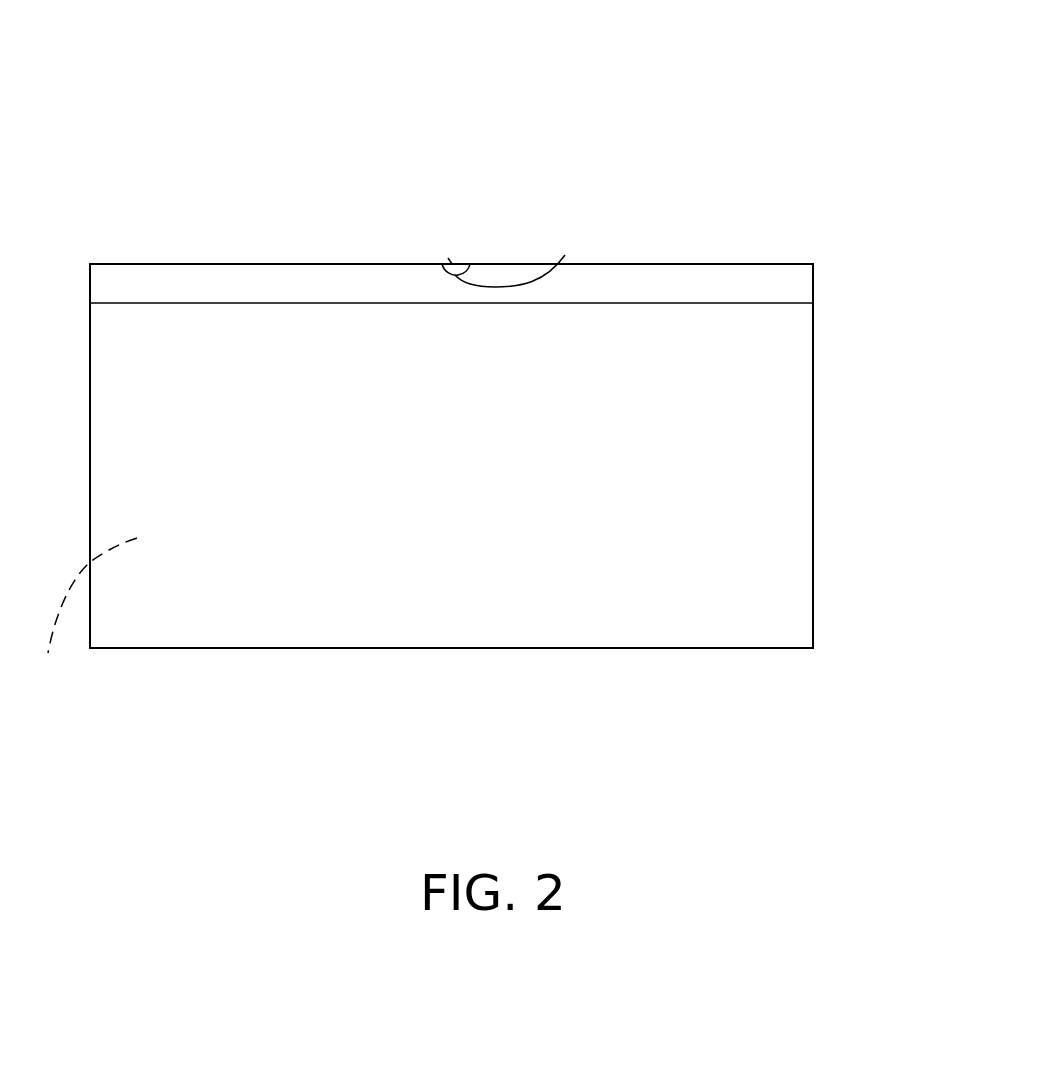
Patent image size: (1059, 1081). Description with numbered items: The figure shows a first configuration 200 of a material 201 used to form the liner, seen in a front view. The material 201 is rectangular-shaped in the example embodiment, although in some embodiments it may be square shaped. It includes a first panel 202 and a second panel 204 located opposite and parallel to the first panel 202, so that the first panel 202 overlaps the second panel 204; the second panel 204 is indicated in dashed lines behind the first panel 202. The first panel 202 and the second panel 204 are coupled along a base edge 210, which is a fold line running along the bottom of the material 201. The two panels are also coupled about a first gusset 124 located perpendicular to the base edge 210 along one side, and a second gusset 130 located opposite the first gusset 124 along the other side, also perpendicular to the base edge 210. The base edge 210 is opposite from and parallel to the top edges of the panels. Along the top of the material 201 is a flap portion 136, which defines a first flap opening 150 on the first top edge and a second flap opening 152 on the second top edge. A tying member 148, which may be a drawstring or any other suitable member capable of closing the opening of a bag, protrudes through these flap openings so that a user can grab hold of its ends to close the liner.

The first configuration 200 is at (780, 100).
The first gusset 124 is at (815, 403).
The flap portion 136 is at (140, 275).
The second gusset 130 is at (88, 332).
The material 201 is at (792, 332).
The first panel 202 is at (775, 575).
The base edge 210 is at (440, 649).
The second panel 204 is at (48, 653).
The first flap opening 150 is at (470, 264).
The tying member 148 is at (565, 255).
The second flap opening 152 is at (450, 260).